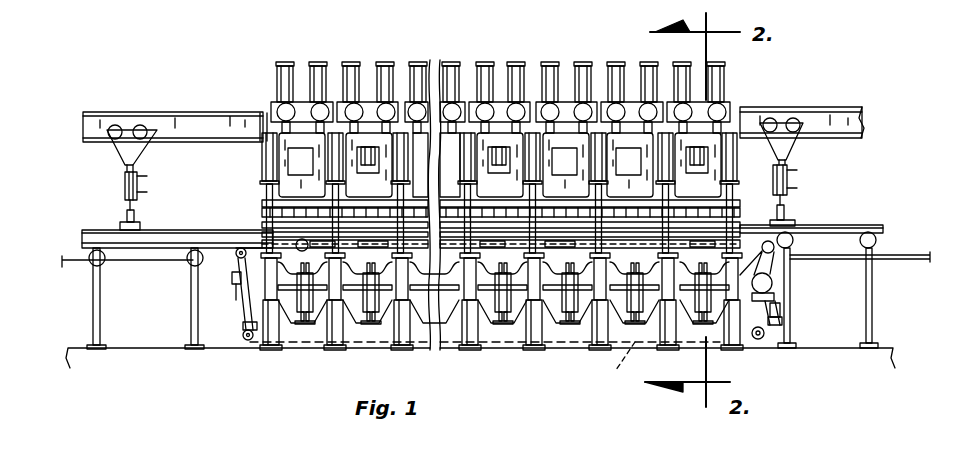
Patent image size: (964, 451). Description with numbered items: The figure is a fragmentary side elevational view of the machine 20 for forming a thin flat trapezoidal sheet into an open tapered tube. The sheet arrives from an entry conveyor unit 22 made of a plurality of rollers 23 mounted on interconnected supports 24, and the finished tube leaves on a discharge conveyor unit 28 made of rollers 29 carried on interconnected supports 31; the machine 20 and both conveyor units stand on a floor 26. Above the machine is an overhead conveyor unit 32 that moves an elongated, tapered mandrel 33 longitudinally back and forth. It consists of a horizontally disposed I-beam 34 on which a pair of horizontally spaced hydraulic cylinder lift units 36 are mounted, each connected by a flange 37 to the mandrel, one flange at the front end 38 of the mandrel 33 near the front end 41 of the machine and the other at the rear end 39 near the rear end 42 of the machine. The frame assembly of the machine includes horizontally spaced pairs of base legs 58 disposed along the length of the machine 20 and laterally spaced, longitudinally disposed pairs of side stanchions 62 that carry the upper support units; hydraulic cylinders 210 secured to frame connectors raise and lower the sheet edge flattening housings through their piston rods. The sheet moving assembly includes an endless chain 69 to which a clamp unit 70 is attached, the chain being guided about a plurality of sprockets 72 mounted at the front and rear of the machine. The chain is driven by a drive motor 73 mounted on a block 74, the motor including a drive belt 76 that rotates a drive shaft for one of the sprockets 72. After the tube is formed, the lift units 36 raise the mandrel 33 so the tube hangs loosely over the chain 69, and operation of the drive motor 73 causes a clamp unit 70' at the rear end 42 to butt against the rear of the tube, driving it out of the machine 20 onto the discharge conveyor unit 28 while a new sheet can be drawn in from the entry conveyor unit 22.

The machine 20 is at (845, 53).
The entry conveyor unit 22 is at (161, 273).
The rollers 23 is at (90, 262).
The interconnected supports 24 is at (100, 310).
The floor 26 is at (140, 352).
The discharge conveyor unit 28 is at (837, 264).
The rollers 29 is at (876, 240).
The interconnected supports 31 is at (872, 310).
The overhead conveyor unit 32 is at (466, 144).
The mandrel 33 is at (465, 217).
The I-beam 34 is at (203, 125).
The hydraulic cylinder lift units 36 is at (125, 182).
The flanges 37 is at (135, 222).
The front end of the mandrel 38 is at (858, 225).
The rear end of the mandrel 39 is at (88, 229).
The front end of the machine 41 is at (744, 102).
The rear end of the machine 42 is at (262, 157).
The base legs 58 is at (273, 330).
The side stanchions 62 is at (262, 172).
The endless chain 69 is at (243, 322).
The clamp unit 70 is at (808, 321).
The clamp unit 70' is at (226, 298).
The sprockets 72 is at (238, 255).
The drive motor 73 is at (773, 283).
The block 74 is at (777, 305).
The drive belt 76 is at (766, 263).
The hydraulic cylinder 210 is at (300, 70).